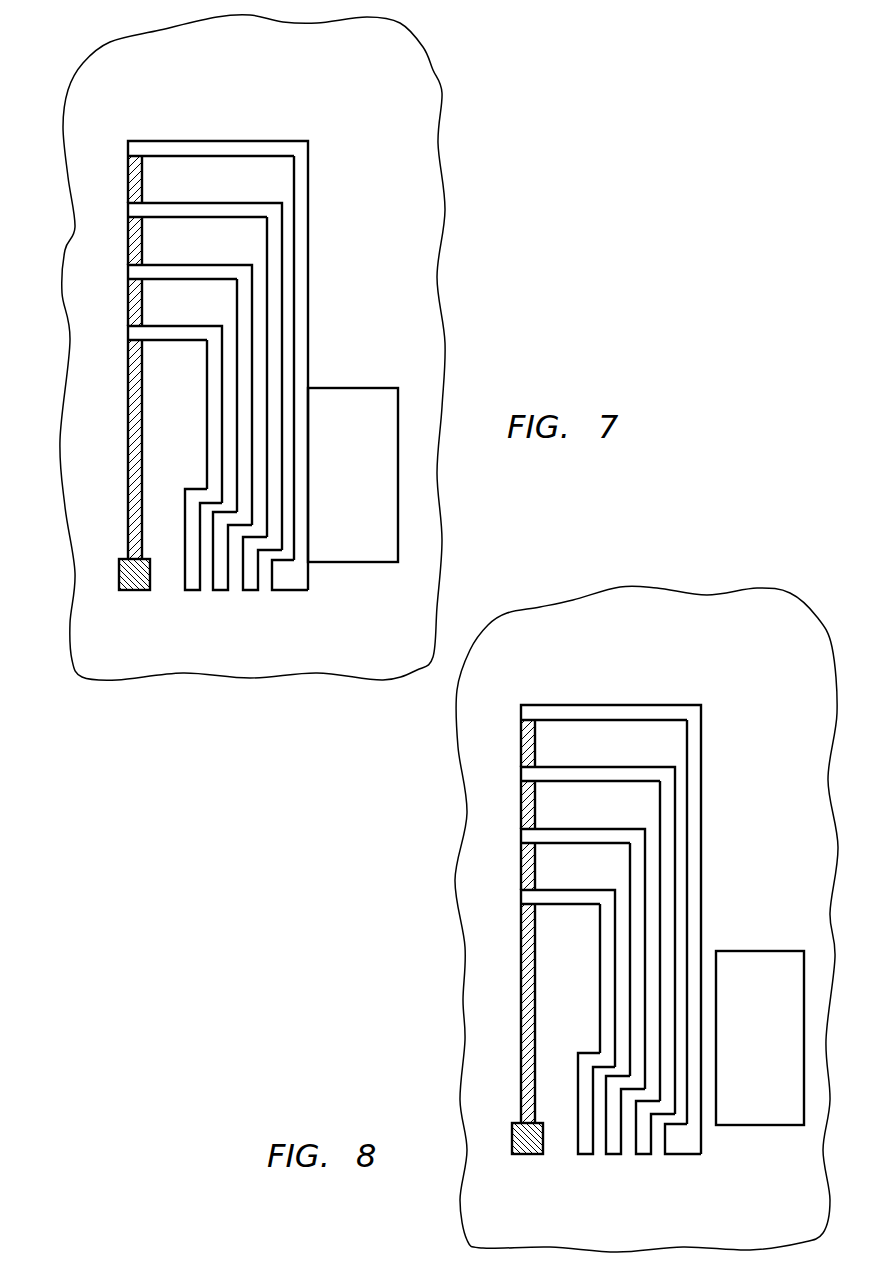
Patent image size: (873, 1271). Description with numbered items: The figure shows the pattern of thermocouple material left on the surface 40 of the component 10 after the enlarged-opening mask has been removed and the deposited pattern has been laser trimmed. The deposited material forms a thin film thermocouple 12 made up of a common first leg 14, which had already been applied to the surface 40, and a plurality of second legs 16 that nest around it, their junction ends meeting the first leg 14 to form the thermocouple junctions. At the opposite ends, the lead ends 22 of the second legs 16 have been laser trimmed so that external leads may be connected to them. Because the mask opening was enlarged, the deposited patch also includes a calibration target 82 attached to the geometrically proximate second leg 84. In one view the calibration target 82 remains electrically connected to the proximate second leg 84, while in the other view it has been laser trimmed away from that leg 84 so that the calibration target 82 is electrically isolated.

In FIG. 7, the component 10 is at (367, 170).
In FIG. 8, the component 10 is at (765, 725).
In FIG. 7, the thin film thermocouple 12 is at (303, 106).
In FIG. 8, the thin film thermocouple 12 is at (619, 918).
In FIG. 7, the common first leg 14 is at (135, 593).
In FIG. 8, the common first leg 14 is at (509, 959).
In FIG. 7, the second legs 16 is at (300, 350).
In FIG. 8, the second legs 16 is at (680, 947).
In FIG. 7, the lead ends 22 is at (285, 580).
In FIG. 8, the lead ends 22 is at (619, 1127).
In FIG. 7, the surface 40 is at (140, 88).
In FIG. 8, the surface 40 is at (546, 638).
In FIG. 7, the calibration target 82 is at (353, 388).
In FIG. 8, the calibration target 82 is at (760, 951).
In FIG. 7, the geometrically proximate second leg 84 is at (310, 234).
In FIG. 8, the geometrically proximate second leg 84 is at (725, 937).